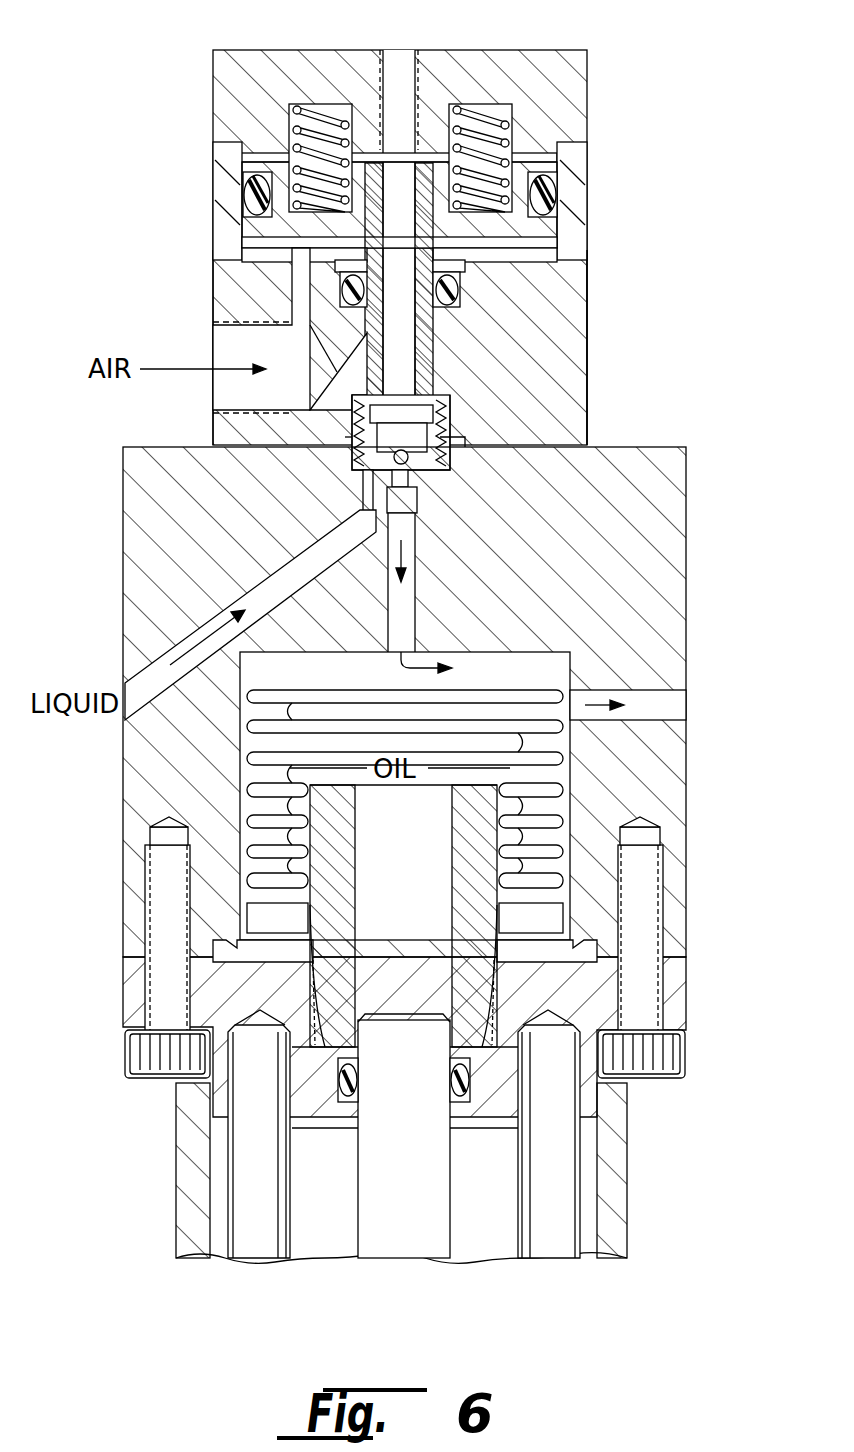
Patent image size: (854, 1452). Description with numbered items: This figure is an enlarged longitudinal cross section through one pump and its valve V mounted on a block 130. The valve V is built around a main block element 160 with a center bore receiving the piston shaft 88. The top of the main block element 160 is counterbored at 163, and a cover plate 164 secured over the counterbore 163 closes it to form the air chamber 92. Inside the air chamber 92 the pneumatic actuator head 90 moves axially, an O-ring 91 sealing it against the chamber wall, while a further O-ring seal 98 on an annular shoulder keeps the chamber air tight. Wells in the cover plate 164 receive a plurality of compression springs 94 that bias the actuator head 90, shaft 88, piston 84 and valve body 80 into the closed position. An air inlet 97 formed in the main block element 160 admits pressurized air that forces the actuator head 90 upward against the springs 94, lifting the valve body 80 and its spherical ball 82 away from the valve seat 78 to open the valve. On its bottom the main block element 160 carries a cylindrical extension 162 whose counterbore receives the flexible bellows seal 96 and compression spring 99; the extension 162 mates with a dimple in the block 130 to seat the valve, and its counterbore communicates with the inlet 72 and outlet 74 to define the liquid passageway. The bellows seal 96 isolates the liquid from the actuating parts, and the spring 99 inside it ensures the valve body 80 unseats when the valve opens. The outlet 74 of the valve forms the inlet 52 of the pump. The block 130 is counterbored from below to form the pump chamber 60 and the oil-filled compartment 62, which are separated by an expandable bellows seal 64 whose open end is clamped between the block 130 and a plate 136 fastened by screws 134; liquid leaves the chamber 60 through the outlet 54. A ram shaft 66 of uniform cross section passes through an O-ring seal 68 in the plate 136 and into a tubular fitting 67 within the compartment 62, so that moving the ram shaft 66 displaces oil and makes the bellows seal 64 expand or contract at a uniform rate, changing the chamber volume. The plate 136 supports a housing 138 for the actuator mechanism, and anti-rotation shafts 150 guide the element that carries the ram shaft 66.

The cover plate 164 is at (213, 88).
The main block element 160 is at (213, 265).
The counterbore 163 is at (215, 222).
The compression springs 94 is at (303, 112).
The pneumatic actuator head 90 is at (555, 150).
The O-ring 91 is at (560, 192).
The air chamber 92 is at (560, 237).
The O-ring seal 98 is at (468, 292).
The valve V is at (587, 315).
The piston 84 is at (360, 327).
The air inlet 97 is at (213, 336).
The shaft 88 is at (425, 360).
The bellows seal 96 is at (448, 410).
The compression spring 99 is at (452, 440).
The cylindrical extension 162 is at (465, 447).
The valve body 80 is at (385, 448).
The valve seat 78 is at (365, 492).
The spherical ball 82 is at (410, 478).
The outlet 74 is at (456, 583).
The inlet 52 is at (415, 560).
The block 130 is at (123, 570).
The inlet 72 is at (252, 596).
The pump chamber 60 is at (530, 660).
The compartment 62 is at (367, 793).
The outlet 54 is at (652, 702).
The bellows seal 64 is at (250, 760).
The tubular fitting 67 is at (455, 878).
The plate 136 is at (125, 1000).
The screws 134 is at (150, 1062).
The O-ring seal 68 is at (345, 1103).
The ram shaft 66 is at (430, 1175).
The anti-rotation shafts 150 is at (555, 1165).
The housing 138 is at (185, 1193).